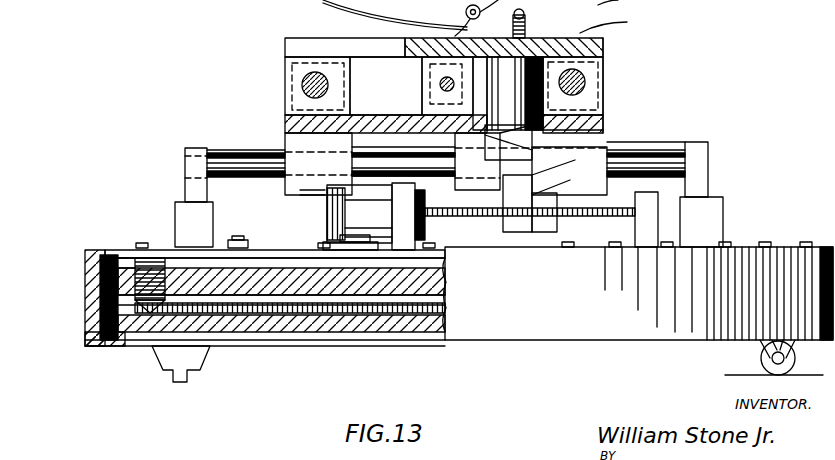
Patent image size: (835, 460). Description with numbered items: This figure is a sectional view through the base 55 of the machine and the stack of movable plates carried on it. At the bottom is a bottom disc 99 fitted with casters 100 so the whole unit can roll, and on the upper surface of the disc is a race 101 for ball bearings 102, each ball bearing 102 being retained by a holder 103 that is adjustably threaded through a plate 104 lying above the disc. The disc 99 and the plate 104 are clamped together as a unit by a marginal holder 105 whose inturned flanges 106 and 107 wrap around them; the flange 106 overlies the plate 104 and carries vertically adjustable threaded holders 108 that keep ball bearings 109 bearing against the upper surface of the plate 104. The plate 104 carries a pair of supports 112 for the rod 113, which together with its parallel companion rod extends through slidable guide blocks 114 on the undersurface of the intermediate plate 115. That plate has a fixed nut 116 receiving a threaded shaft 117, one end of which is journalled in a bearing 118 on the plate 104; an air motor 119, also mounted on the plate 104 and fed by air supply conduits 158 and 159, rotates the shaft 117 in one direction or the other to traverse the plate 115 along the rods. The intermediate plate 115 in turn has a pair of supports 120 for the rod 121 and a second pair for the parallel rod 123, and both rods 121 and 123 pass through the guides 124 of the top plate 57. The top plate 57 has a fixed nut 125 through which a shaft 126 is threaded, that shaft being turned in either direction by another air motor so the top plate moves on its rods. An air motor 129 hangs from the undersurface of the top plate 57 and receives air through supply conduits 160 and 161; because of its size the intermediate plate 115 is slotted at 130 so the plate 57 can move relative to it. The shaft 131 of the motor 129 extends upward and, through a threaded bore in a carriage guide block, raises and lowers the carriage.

The base 55 is at (586, 342).
The top plate 57 is at (604, 45).
The bottom disc 99 is at (282, 318).
The casters 100 is at (755, 353).
The race 101 is at (245, 346).
The ball bearings 102 is at (142, 340).
The holder 103 is at (168, 247).
The plate 104 is at (353, 283).
The marginal holder 105 is at (84, 306).
The inturned flange 106 is at (108, 256).
The inturned flange 107 is at (152, 352).
The threaded holders 108 is at (112, 250).
The ball bearings 109 is at (96, 285).
The supports 112 is at (185, 150).
The rod 113 is at (670, 146).
The guide blocks 114 is at (285, 184).
The intermediate plate 115 is at (605, 118).
The fixed nut 116 is at (542, 232).
The threaded shaft 117 is at (482, 213).
The bearing 118 is at (655, 204).
The air motor 119 is at (330, 222).
The supports 120 is at (292, 100).
The rod 121 is at (320, 72).
The rod 123 is at (582, 80).
The guides 124 is at (285, 65).
The fixed nut 125 is at (422, 70).
The shaft 126 is at (440, 86).
The air motor 129 is at (619, 22).
The slot 130 is at (607, 130).
The shaft 131 is at (528, 25).
The air supply conduit 158 is at (343, 212).
The air supply conduit 159 is at (290, 232).
The air supply conduit 160 is at (492, 143).
The air supply conduit 161 is at (546, 160).